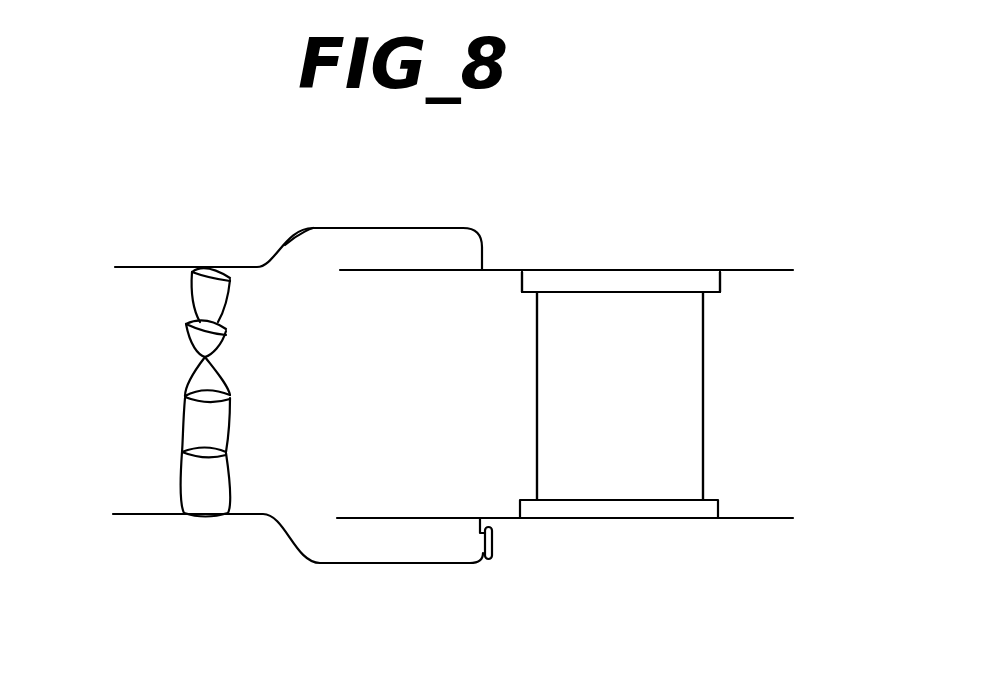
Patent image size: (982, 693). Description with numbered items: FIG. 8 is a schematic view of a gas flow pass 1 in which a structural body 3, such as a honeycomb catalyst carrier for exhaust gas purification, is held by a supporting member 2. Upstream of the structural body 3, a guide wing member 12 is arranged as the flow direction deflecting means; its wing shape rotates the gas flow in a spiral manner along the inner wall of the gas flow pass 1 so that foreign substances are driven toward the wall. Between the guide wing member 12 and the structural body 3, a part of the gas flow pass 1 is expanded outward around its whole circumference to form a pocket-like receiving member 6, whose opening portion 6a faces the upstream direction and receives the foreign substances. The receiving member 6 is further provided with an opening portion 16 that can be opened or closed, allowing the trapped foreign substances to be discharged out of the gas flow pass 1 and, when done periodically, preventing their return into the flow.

The gas flow pass 1 is at (543, 266).
The supporting member 2 is at (688, 280).
The structural body 3 is at (680, 421).
The receiving member 6 is at (423, 269).
The opening portion 6a is at (335, 250).
The guide wing member 12 is at (198, 498).
The opening portion 16 is at (493, 551).